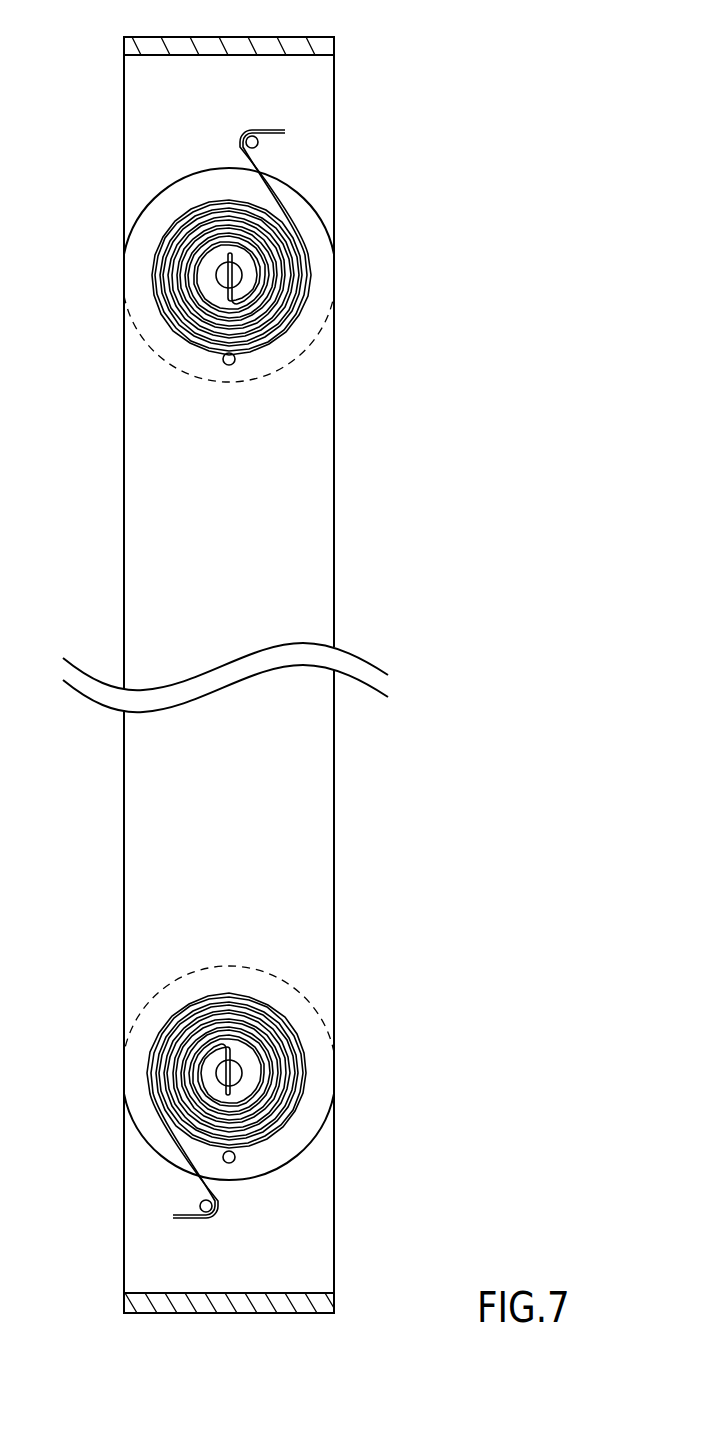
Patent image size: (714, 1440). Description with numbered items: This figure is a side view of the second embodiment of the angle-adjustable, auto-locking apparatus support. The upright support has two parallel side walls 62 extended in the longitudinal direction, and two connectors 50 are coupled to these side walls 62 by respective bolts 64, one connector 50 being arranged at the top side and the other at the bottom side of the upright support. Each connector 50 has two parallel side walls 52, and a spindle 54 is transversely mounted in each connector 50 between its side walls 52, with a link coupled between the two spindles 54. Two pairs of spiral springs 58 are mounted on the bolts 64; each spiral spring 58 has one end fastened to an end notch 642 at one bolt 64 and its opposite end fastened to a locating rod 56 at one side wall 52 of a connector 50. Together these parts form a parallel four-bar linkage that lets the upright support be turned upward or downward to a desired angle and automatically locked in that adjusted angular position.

The connector 50 is at (298, 46).
The side wall of connector 52 is at (312, 83).
The spindle 54 is at (236, 360).
The locating rod 56 is at (258, 143).
The spiral spring 58 is at (288, 221).
The side wall of upright support 62 is at (297, 565).
The bolt 64 is at (242, 275).
The end notch 642 is at (216, 274).